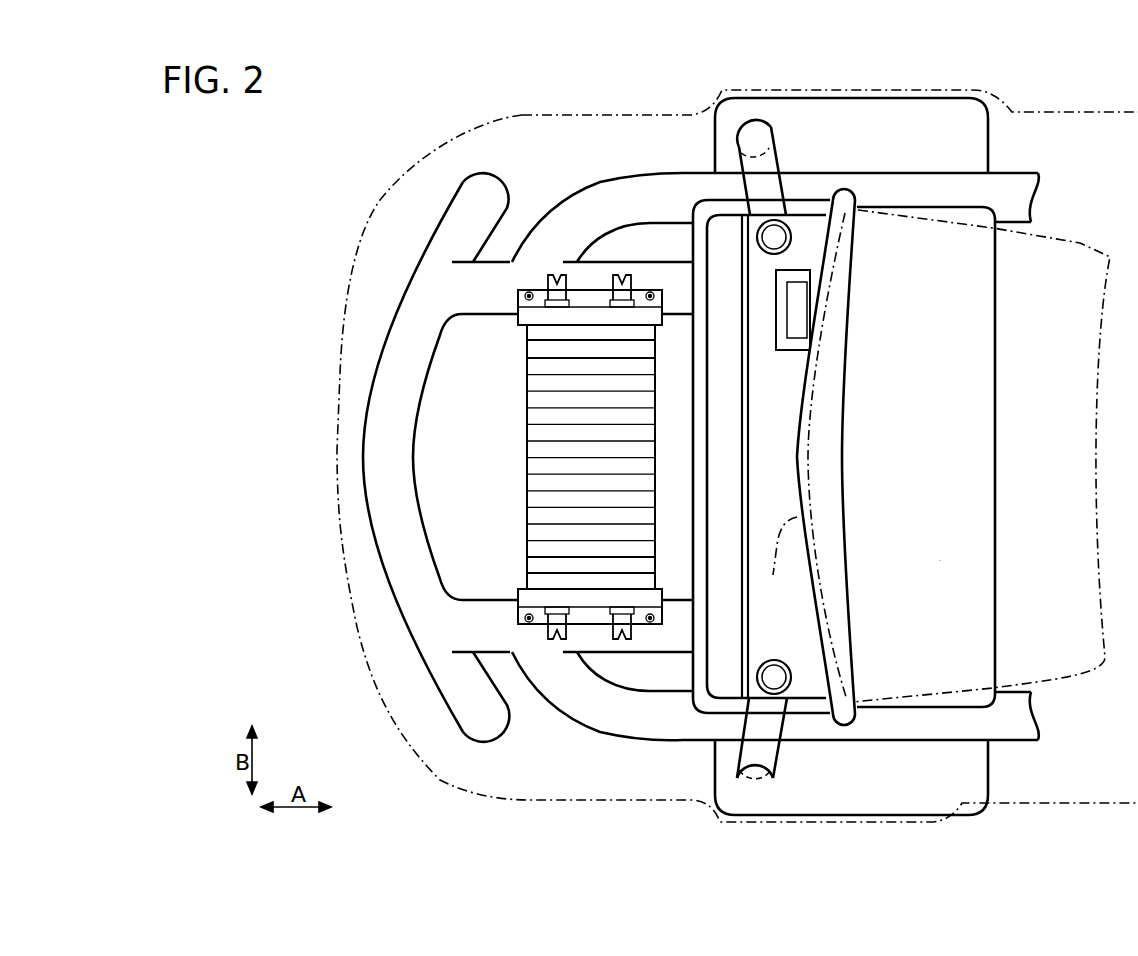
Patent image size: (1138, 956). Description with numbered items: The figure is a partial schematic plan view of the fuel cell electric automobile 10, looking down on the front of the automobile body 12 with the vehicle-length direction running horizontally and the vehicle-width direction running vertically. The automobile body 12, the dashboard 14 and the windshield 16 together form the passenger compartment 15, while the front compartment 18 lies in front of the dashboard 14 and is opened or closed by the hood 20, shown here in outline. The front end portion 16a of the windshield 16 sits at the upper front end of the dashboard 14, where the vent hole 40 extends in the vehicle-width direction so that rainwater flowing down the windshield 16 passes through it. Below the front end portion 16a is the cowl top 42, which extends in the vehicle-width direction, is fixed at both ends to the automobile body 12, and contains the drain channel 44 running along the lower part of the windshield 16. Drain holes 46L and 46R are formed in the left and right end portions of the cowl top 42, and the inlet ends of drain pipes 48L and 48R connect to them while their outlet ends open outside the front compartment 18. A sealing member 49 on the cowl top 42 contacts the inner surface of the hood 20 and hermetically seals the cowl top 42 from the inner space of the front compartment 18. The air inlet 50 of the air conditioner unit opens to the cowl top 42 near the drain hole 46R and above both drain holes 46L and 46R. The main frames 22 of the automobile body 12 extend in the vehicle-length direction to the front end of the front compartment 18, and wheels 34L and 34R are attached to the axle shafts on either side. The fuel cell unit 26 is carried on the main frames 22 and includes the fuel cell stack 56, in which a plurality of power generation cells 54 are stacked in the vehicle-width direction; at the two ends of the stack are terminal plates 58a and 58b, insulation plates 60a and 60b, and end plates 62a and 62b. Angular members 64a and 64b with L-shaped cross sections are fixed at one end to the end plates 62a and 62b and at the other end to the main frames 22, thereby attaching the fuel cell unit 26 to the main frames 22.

The fuel cell electric automobile 10 is at (353, 153).
The automobile body 12 is at (373, 218).
The dashboard 14 is at (988, 373).
The passenger compartment 15 is at (1013, 545).
The windshield 16 is at (1080, 243).
The front end portion of the windshield 16a is at (777, 561).
The front compartment 18 is at (440, 397).
The hood 20 is at (516, 114).
The main frames 22 is at (480, 290).
The fuel cell unit 26 is at (551, 485).
The wheel 34R is at (980, 147).
The wheel 34L is at (980, 776).
The vent hole 40 is at (773, 461).
The cowl top 42 is at (761, 634).
The drain channel 44 is at (785, 378).
The drain hole 46R is at (774, 237).
The drain hole 46L is at (774, 677).
The drain pipe 48R is at (770, 165).
The drain pipe 48L is at (768, 748).
The sealing member 49 is at (700, 468).
The air inlet 50 is at (795, 302).
The power generation cell 54 is at (531, 416).
The fuel cell stack 56 is at (548, 457).
The terminal plate 58a is at (532, 563).
The terminal plate 58b is at (532, 350).
The insulation plate 60a is at (533, 577).
The insulation plate 60b is at (533, 333).
The end plate 62a is at (520, 593).
The end plate 62b is at (517, 321).
The angular member 64a is at (542, 602).
The angular member 64b is at (590, 295).